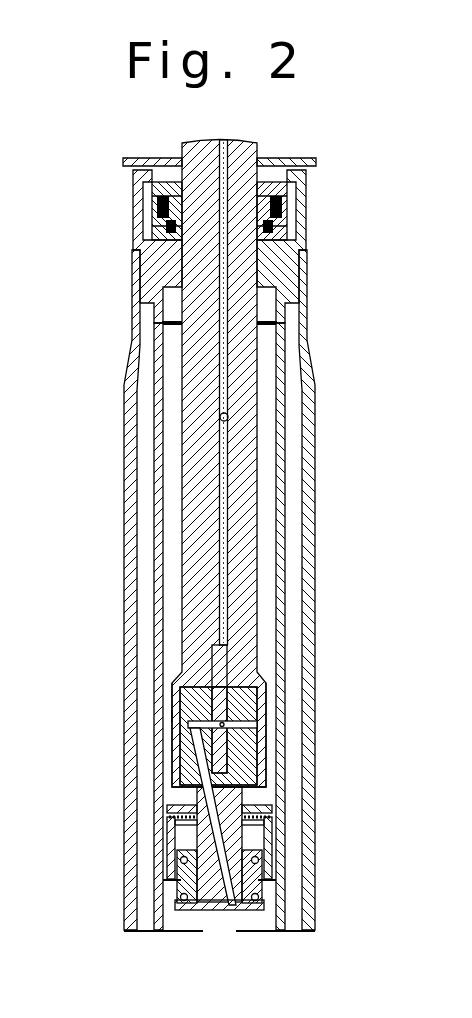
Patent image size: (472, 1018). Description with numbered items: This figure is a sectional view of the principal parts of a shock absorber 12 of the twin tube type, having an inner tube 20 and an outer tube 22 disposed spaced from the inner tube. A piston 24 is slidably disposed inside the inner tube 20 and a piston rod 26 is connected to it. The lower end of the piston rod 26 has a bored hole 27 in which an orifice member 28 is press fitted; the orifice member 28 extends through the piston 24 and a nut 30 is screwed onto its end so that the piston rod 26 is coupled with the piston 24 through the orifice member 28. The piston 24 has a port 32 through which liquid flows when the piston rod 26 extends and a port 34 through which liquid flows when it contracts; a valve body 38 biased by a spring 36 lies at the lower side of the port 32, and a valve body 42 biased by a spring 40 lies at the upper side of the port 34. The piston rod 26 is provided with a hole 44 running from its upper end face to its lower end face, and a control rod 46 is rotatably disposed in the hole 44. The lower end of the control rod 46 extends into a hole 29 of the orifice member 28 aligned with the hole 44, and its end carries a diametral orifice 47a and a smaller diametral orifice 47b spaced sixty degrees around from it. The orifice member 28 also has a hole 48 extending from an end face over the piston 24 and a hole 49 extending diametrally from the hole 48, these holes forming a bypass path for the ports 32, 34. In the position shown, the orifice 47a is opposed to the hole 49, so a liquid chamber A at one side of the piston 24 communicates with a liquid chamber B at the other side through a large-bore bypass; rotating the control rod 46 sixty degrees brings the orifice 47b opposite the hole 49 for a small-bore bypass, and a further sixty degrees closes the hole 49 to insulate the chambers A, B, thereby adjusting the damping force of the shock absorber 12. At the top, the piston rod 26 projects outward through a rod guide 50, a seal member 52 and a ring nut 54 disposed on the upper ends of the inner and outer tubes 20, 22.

The shock absorber 12 is at (338, 376).
The inner tube 20 is at (158, 596).
The outer tube 22 is at (133, 562).
The piston 24 is at (166, 870).
The piston rod 26 is at (188, 338).
The bored hole 27 is at (178, 762).
The orifice member 28 is at (250, 778).
The hole 29 is at (240, 751).
The nut 30 is at (198, 912).
The port 32 is at (262, 856).
The port 34 is at (170, 838).
The spring 36 is at (262, 903).
The valve body 38 is at (258, 881).
The spring 40 is at (262, 806).
The valve body 42 is at (262, 824).
The hole 44 is at (227, 418).
The control rod 46 is at (218, 372).
The orifice 47a is at (255, 722).
The orifice 47b is at (235, 682).
The hole 48 is at (236, 918).
The hole 49 is at (250, 706).
The rod guide 50 is at (152, 256).
The seal member 52 is at (154, 208).
The ring nut 54 is at (136, 170).
The liquid chamber A is at (172, 716).
The liquid chamber B is at (174, 934).